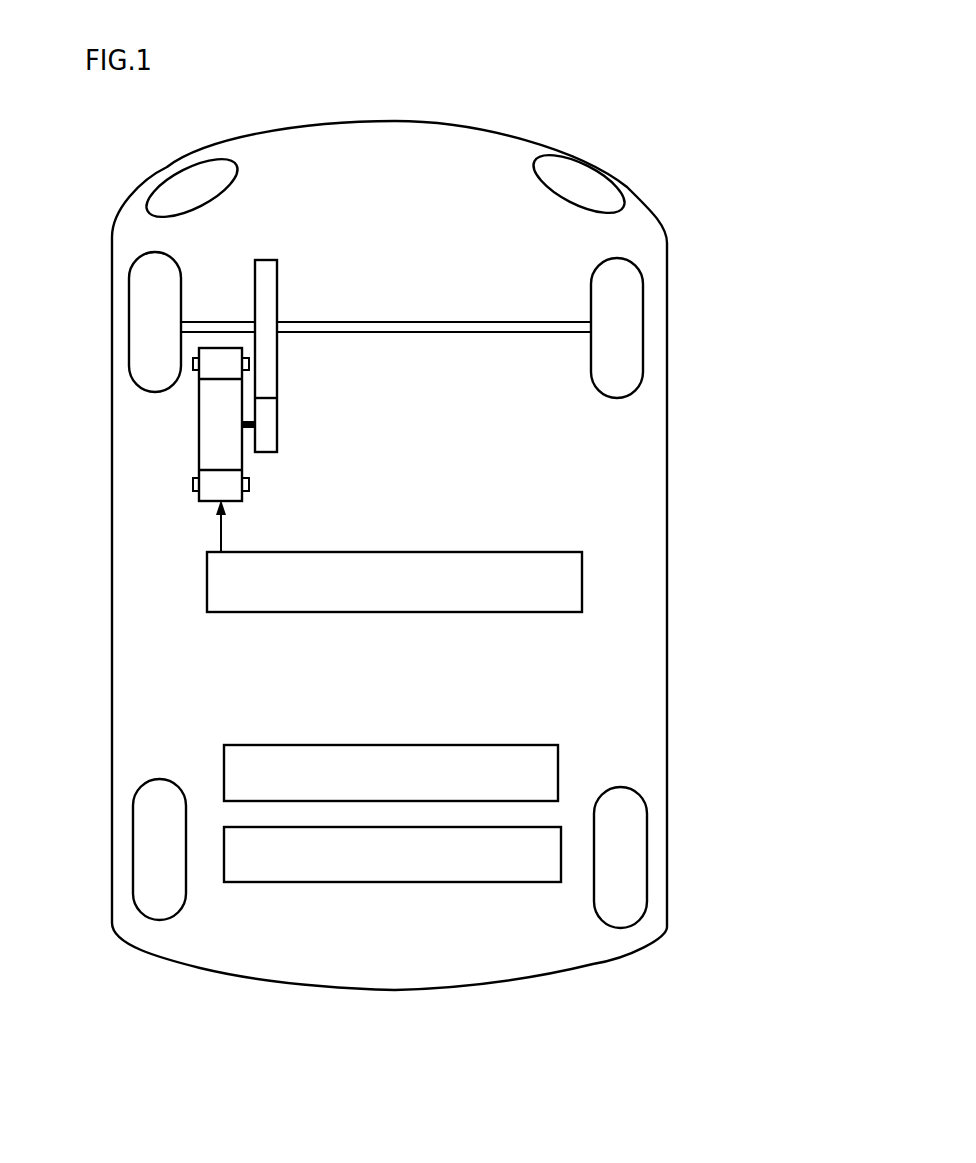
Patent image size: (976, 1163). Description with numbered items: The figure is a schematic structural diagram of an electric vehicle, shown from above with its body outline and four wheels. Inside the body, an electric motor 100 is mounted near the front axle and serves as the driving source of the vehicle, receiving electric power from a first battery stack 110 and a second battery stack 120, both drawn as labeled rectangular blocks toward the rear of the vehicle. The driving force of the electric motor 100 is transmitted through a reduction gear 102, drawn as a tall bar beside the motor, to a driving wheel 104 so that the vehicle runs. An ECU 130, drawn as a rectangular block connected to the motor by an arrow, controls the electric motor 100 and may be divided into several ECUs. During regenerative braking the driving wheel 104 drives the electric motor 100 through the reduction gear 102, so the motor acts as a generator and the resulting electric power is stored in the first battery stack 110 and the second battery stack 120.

The electric motor 100 is at (199, 422).
The reduction gear 102 is at (290, 268).
The driving wheel 104 is at (112, 336).
The first battery stack 110 is at (224, 765).
The second battery stack 120 is at (363, 882).
The ECU 130 is at (207, 587).